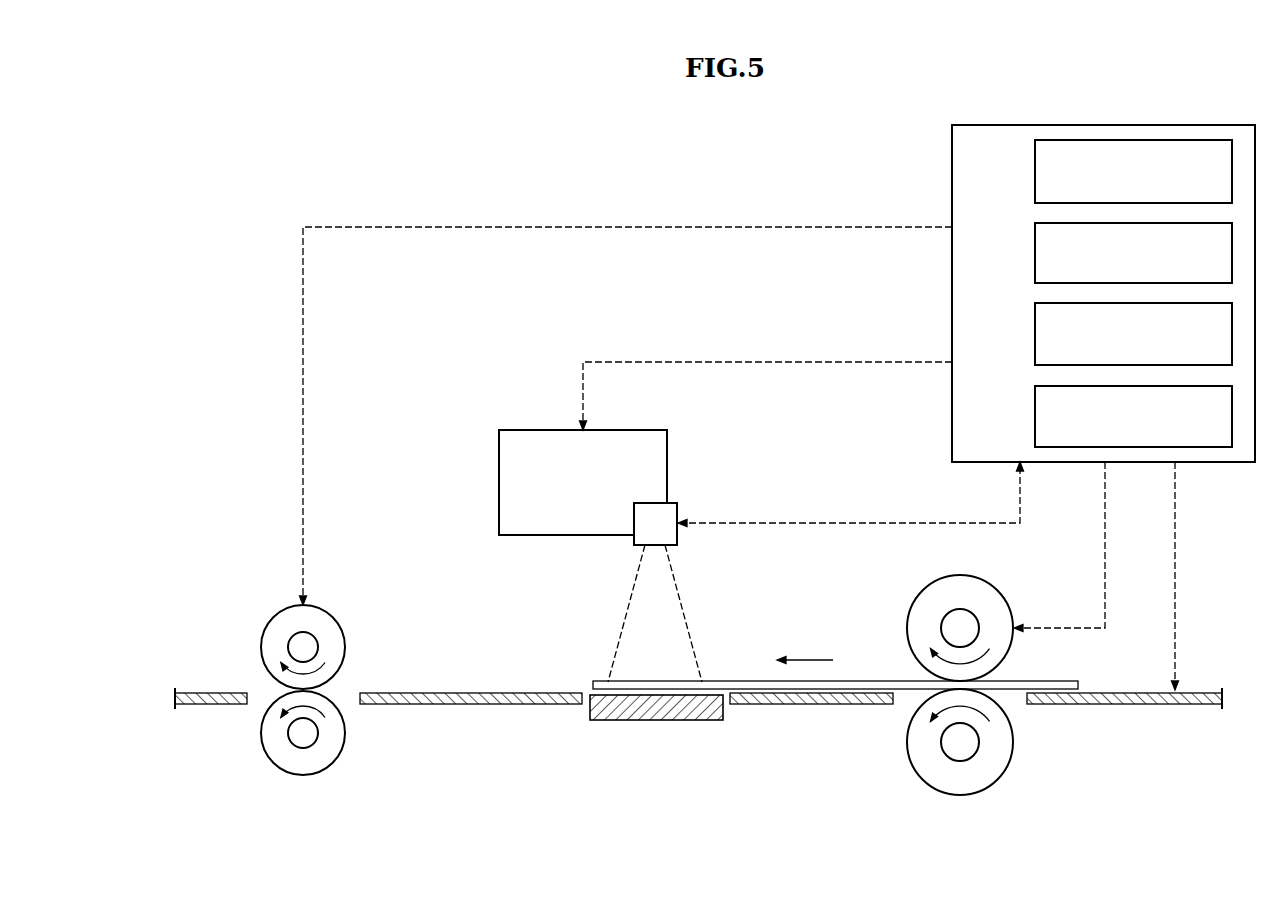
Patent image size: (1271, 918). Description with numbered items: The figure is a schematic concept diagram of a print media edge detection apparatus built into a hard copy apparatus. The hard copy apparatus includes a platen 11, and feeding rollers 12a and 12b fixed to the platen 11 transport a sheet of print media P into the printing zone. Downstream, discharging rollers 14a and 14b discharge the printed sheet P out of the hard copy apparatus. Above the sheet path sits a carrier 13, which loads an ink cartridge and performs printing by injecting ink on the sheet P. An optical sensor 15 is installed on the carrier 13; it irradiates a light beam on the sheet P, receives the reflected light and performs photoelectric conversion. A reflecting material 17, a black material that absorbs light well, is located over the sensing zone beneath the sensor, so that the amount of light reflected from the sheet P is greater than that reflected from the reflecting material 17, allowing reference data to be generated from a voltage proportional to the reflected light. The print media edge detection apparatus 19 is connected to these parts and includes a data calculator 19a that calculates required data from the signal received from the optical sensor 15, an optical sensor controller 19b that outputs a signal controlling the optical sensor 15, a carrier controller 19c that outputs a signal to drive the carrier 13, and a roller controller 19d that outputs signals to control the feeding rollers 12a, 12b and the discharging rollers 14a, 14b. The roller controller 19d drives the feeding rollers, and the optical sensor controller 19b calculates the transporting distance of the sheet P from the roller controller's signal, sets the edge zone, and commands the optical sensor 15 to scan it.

The print media edge detection apparatus 19 is at (1100, 125).
The data calculator 19a is at (1035, 183).
The optical sensor controller 19b is at (1035, 241).
The carrier controller 19c is at (1035, 346).
The roller controller 19d is at (1035, 405).
The carrier 13 is at (655, 430).
The optical sensor 15 is at (677, 515).
The reflecting material 17 is at (625, 720).
The platen 11 is at (1156, 704).
The sheet of print media P is at (1050, 681).
The feeding roller 12a is at (1000, 597).
The feeding roller 12b is at (1002, 764).
The discharging roller 14a is at (333, 622).
The discharging roller 14b is at (323, 762).